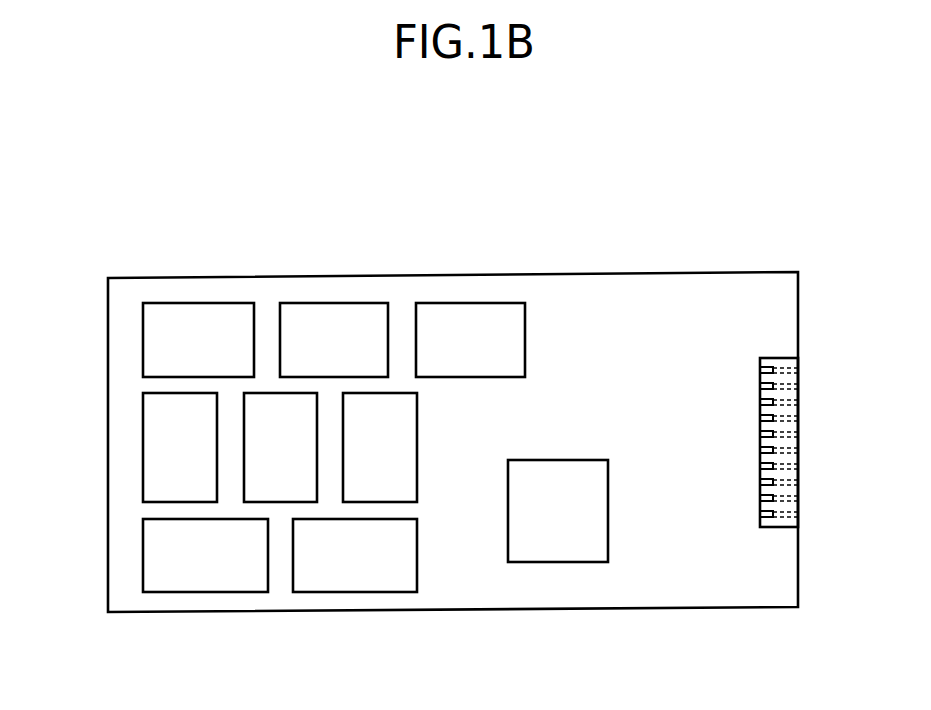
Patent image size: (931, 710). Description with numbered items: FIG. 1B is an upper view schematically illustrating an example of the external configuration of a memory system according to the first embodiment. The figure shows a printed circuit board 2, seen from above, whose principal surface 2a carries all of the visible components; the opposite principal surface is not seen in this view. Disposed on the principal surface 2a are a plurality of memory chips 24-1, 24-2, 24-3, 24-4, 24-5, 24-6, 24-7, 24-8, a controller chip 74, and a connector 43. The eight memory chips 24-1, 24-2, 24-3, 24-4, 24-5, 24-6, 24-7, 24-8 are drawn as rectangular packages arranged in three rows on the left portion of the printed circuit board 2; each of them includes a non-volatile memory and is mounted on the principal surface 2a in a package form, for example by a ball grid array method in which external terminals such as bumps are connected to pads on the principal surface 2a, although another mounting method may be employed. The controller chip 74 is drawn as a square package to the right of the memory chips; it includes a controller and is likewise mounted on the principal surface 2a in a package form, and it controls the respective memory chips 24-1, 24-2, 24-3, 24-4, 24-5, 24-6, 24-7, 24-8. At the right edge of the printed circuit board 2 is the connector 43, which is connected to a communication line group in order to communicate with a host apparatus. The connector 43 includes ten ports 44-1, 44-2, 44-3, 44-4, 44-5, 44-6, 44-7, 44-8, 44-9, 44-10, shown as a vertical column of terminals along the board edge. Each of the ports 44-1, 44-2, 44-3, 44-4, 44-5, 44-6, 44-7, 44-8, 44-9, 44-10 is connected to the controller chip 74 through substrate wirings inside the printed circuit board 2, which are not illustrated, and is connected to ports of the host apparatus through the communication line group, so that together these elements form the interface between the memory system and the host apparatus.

The printed circuit board 2 is at (790, 327).
The principal surface 2a is at (651, 595).
The memory chip 24-1 is at (473, 327).
The memory chip 24-2 is at (331, 327).
The memory chip 24-3 is at (214, 327).
The memory chip 24-4 is at (403, 417).
The memory chip 24-5 is at (268, 415).
The memory chip 24-6 is at (172, 462).
The memory chip 24-7 is at (351, 562).
The memory chip 24-8 is at (203, 562).
The controller chip 74 is at (562, 528).
The connector 43 is at (790, 487).
The port 44-1 is at (760, 370).
The port 44-2 is at (760, 386).
The port 44-3 is at (760, 402).
The port 44-4 is at (760, 418).
The port 44-5 is at (760, 434).
The port 44-6 is at (760, 450).
The port 44-7 is at (760, 466).
The port 44-8 is at (760, 482).
The port 44-9 is at (760, 498).
The port 44-10 is at (760, 514).